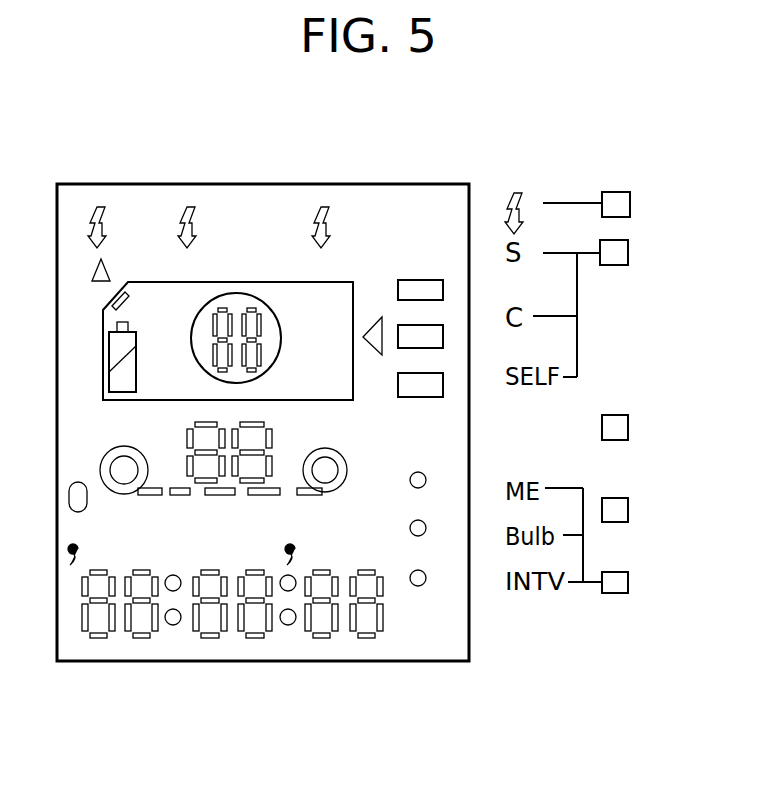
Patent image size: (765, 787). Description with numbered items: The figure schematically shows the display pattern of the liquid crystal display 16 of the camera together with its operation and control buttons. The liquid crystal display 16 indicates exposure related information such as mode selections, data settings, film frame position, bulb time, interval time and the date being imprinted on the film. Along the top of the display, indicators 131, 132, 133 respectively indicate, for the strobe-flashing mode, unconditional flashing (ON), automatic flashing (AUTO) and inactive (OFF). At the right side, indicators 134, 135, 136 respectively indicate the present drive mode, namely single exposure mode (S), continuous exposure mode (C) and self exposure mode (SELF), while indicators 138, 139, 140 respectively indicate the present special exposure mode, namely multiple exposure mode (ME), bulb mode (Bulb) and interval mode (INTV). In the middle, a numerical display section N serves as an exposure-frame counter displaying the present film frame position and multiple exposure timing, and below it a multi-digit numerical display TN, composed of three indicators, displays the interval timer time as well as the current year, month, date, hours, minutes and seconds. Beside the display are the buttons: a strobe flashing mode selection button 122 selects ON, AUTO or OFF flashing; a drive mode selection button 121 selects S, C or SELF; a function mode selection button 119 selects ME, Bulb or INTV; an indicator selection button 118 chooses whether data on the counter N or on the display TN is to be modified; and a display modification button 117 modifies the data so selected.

The liquid crystal display 16 is at (410, 188).
The unconditional flashing indicator 131 is at (126, 202).
The automatic flashing indicator 132 is at (232, 202).
The inactive flashing indicator 133 is at (347, 203).
The single exposure mode indicator 134 is at (418, 290).
The continuous exposure mode indicator 135 is at (413, 336).
The self exposure mode indicator 136 is at (413, 385).
The multiple exposure mode indicator 138 is at (420, 478).
The bulb mode indicator 139 is at (419, 529).
The interval mode indicator 140 is at (419, 579).
The strobe flashing mode selection button 122 is at (615, 203).
The drive mode selection button 121 is at (620, 258).
The indicator selection button 118 is at (615, 425).
The display modification button 117 is at (613, 507).
The function mode selection button 119 is at (613, 582).
The numerical display section N is at (187, 437).
The multi-digit numerical display TN is at (225, 620).